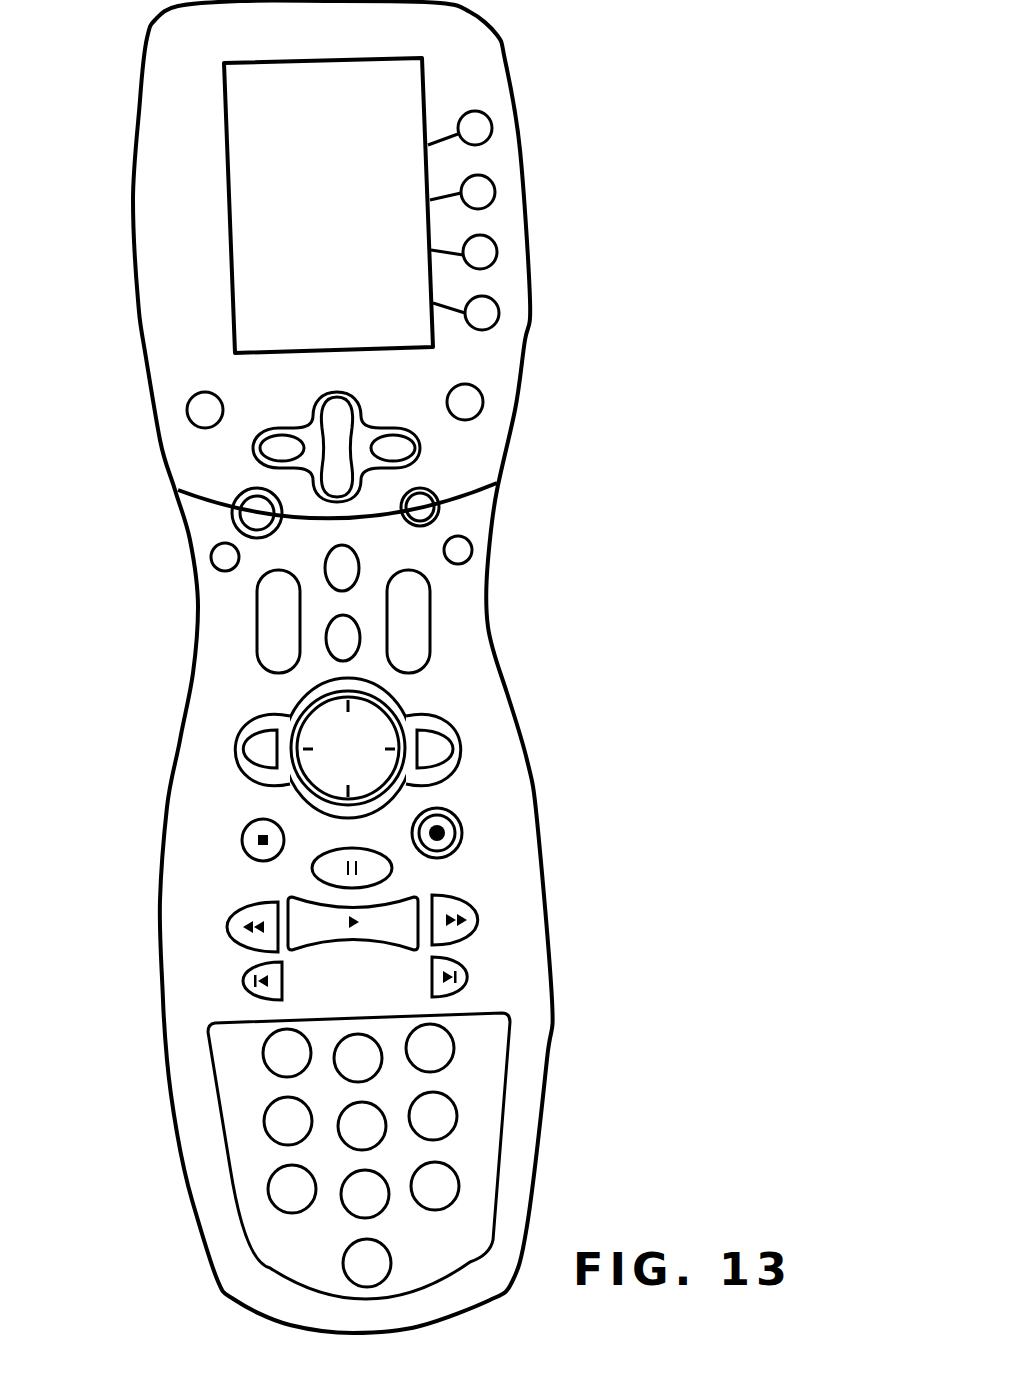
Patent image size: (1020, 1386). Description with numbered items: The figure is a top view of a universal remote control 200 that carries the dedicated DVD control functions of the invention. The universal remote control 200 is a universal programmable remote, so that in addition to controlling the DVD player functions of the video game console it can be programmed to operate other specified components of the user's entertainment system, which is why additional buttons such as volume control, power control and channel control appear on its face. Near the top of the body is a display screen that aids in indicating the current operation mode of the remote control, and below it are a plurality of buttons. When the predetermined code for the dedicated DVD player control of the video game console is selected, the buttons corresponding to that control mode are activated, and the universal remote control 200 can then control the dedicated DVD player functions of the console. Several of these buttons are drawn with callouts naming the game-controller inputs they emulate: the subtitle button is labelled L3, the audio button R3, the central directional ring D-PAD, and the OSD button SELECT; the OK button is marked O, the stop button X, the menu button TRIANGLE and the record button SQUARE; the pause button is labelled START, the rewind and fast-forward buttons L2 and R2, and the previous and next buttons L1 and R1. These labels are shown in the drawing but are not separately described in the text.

The universal remote control 200 is at (642, 125).
The L3 button (subtitle) L3 is at (357, 562).
The R3 button (audio) R3 is at (471, 551).
The directional pad D-PAD is at (368, 713).
The select button (OSD) SELECT is at (212, 563).
The circle button (OK) O is at (252, 752).
The cross button (stop) X is at (243, 842).
The triangle button (menu) TRIANGLE is at (443, 747).
The square button (record) SQUARE is at (462, 835).
The start button (pause) START is at (393, 867).
The L2 button (rewind) L2 is at (227, 930).
The R2 button (fast forward) R2 is at (480, 923).
The L1 button (previous) L1 is at (243, 982).
The R1 button (next) R1 is at (468, 975).